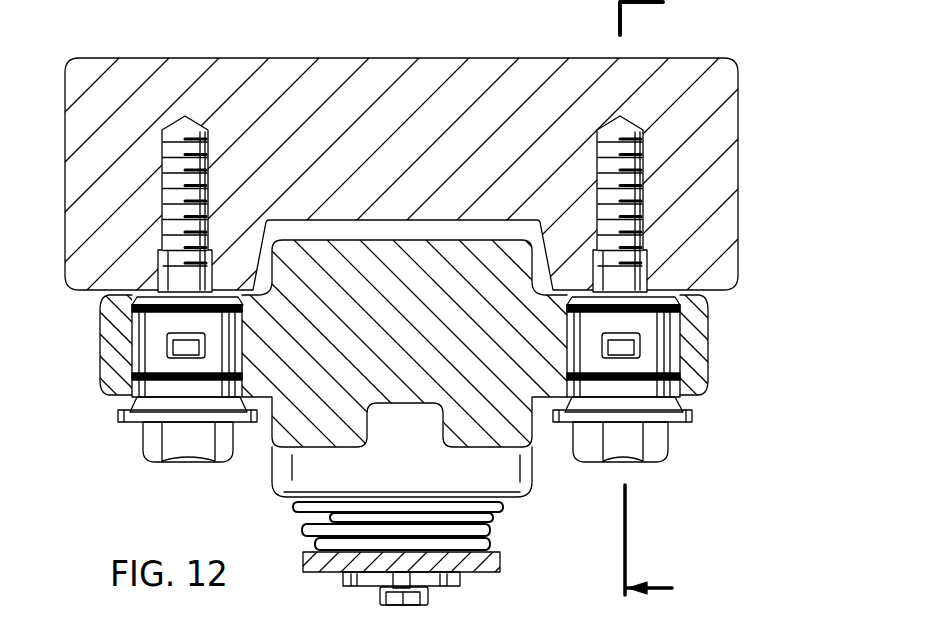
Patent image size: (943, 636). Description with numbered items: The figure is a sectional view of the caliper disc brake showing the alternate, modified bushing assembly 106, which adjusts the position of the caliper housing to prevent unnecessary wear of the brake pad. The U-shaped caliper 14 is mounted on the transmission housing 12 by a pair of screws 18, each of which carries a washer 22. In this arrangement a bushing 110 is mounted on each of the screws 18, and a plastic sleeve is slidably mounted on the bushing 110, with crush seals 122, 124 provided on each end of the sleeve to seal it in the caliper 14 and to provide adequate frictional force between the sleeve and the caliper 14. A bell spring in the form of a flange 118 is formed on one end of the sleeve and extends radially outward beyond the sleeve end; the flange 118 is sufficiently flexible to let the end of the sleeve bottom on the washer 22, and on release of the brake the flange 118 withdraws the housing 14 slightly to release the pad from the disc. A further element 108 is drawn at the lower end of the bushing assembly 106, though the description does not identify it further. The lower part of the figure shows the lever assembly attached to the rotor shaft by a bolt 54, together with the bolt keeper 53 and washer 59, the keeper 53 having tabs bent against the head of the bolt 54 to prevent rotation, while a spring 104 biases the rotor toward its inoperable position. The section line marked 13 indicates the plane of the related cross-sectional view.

The transmission housing 12 is at (345, 58).
The caliper 14 is at (272, 487).
The bushing 110 is at (147, 290).
The modified bushing assembly 106 is at (125, 343).
The nut flange 108 is at (127, 398).
The crush seal 124 is at (690, 302).
The crush seal 122 is at (677, 383).
The flange 118 is at (683, 401).
The washer 22 is at (120, 417).
The screws 18 is at (145, 452).
The spring 104 is at (482, 532).
The washer 59 is at (500, 562).
The bolt keeper 53 is at (458, 580).
The bolt 54 is at (398, 600).
The section line 13- 13 is at (646, 310).